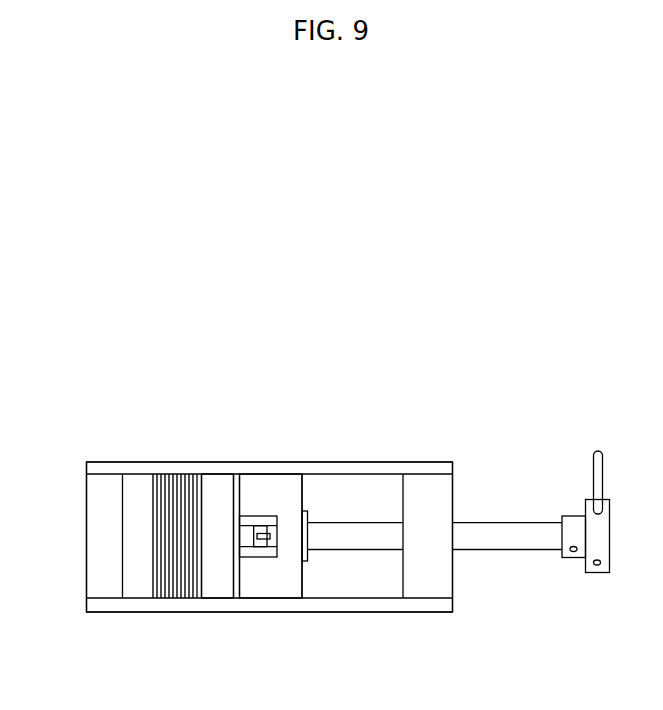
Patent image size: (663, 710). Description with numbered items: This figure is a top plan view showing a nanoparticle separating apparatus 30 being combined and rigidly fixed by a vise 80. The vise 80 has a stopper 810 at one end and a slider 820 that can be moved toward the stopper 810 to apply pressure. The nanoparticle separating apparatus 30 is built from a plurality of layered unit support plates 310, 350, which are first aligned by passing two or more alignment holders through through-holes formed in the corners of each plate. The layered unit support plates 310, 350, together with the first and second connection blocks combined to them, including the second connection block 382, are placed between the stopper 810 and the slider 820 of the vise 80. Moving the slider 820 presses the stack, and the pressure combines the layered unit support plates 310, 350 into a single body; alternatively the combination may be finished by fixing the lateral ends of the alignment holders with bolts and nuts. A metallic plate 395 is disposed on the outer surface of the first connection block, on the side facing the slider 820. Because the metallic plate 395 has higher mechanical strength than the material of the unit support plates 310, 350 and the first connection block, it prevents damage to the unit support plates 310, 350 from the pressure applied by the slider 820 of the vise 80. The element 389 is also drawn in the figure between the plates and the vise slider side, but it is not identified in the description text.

The vise 80 is at (474, 430).
The stopper 810 is at (98, 509).
The second connection block 382 is at (135, 483).
The nanoparticle separating apparatus 30 is at (178, 466).
The unit support plate 350 is at (196, 480).
The unit support plate 310 is at (203, 478).
The spacer 389 is at (218, 590).
The metallic plate 395 is at (237, 588).
The slider 820 is at (285, 483).